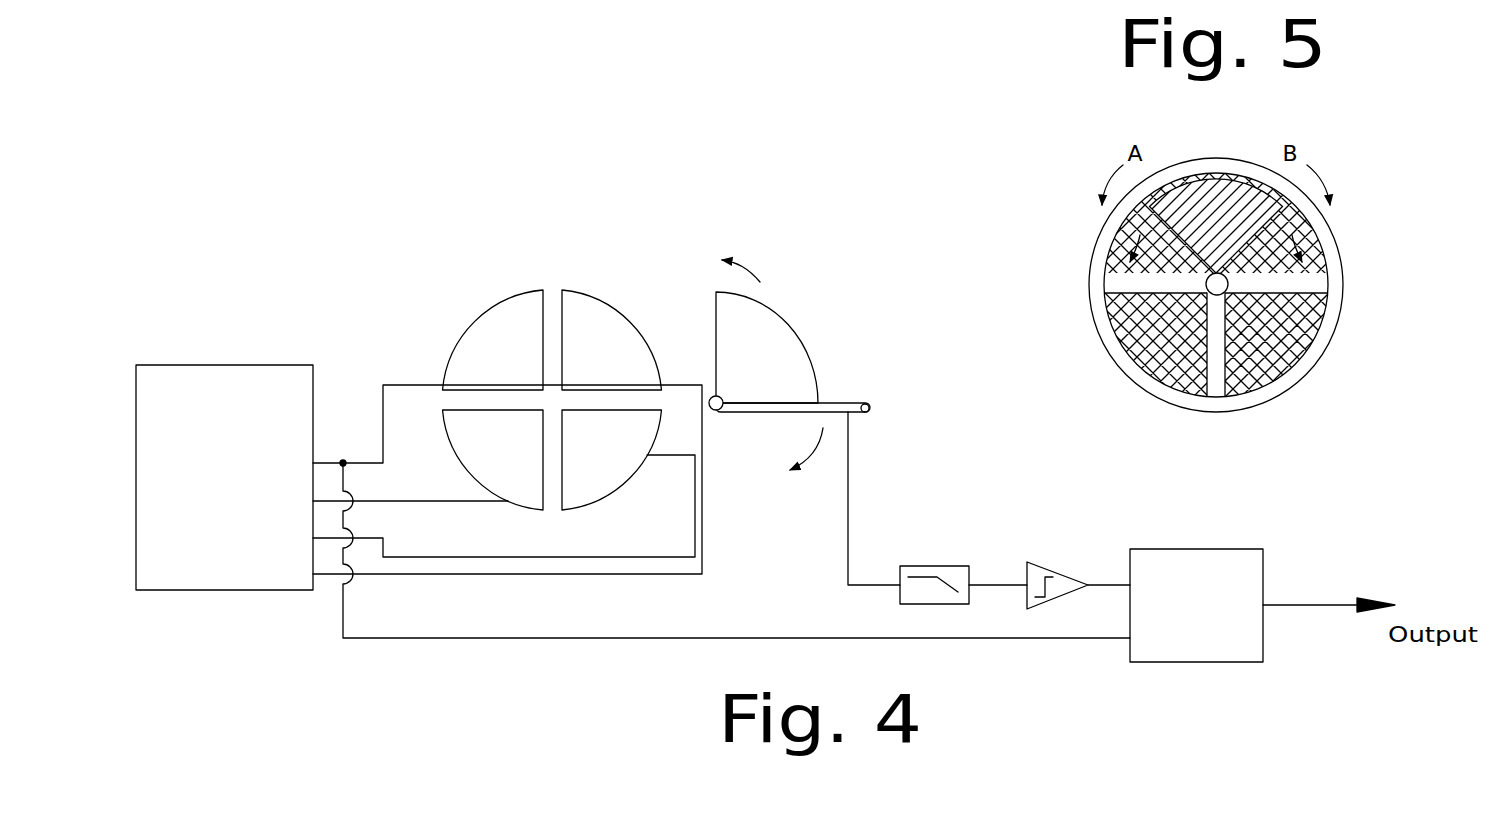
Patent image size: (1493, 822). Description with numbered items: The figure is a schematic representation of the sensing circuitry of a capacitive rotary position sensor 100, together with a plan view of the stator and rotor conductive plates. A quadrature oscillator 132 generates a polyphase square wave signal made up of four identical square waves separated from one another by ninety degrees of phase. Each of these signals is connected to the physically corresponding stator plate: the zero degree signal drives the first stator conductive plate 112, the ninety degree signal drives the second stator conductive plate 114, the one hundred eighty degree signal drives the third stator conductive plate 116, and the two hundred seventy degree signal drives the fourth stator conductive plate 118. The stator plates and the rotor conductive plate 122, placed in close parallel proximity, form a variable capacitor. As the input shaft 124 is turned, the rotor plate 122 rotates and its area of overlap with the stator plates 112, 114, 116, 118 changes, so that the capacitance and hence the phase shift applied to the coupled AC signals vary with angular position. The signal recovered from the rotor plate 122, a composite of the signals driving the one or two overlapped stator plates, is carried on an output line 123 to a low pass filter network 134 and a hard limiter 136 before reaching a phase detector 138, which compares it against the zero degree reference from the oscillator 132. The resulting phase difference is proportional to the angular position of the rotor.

In FIG. 4, the rotary position sensor 100 is at (543, 370).
In FIG. 4, the first stator conductive plate 112 is at (467, 323).
In FIG. 5, the first stator conductive plate 112 is at (1120, 240).
In FIG. 4, the second stator conductive plate 114 is at (447, 435).
In FIG. 5, the second stator conductive plate 114 is at (1130, 360).
In FIG. 4, the third stator conductive plate 116 is at (627, 487).
In FIG. 5, the third stator conductive plate 116 is at (1300, 330).
In FIG. 4, the fourth stator conductive plate 118 is at (628, 315).
In FIG. 5, the fourth stator conductive plate 118 is at (1315, 242).
In FIG. 4, the rotor conductive plate 122 is at (787, 312).
In FIG. 5, the rotor conductive plate 122 is at (1210, 180).
In FIG. 4, the output line 123 is at (850, 478).
In FIG. 4, the input shaft 124 is at (833, 396).
In FIG. 4, the quadrature oscillator 132 is at (207, 365).
In FIG. 4, the low pass filter network 134 is at (900, 595).
In FIG. 4, the hard limiter 136 is at (1073, 577).
In FIG. 4, the phase detector 138 is at (1222, 547).